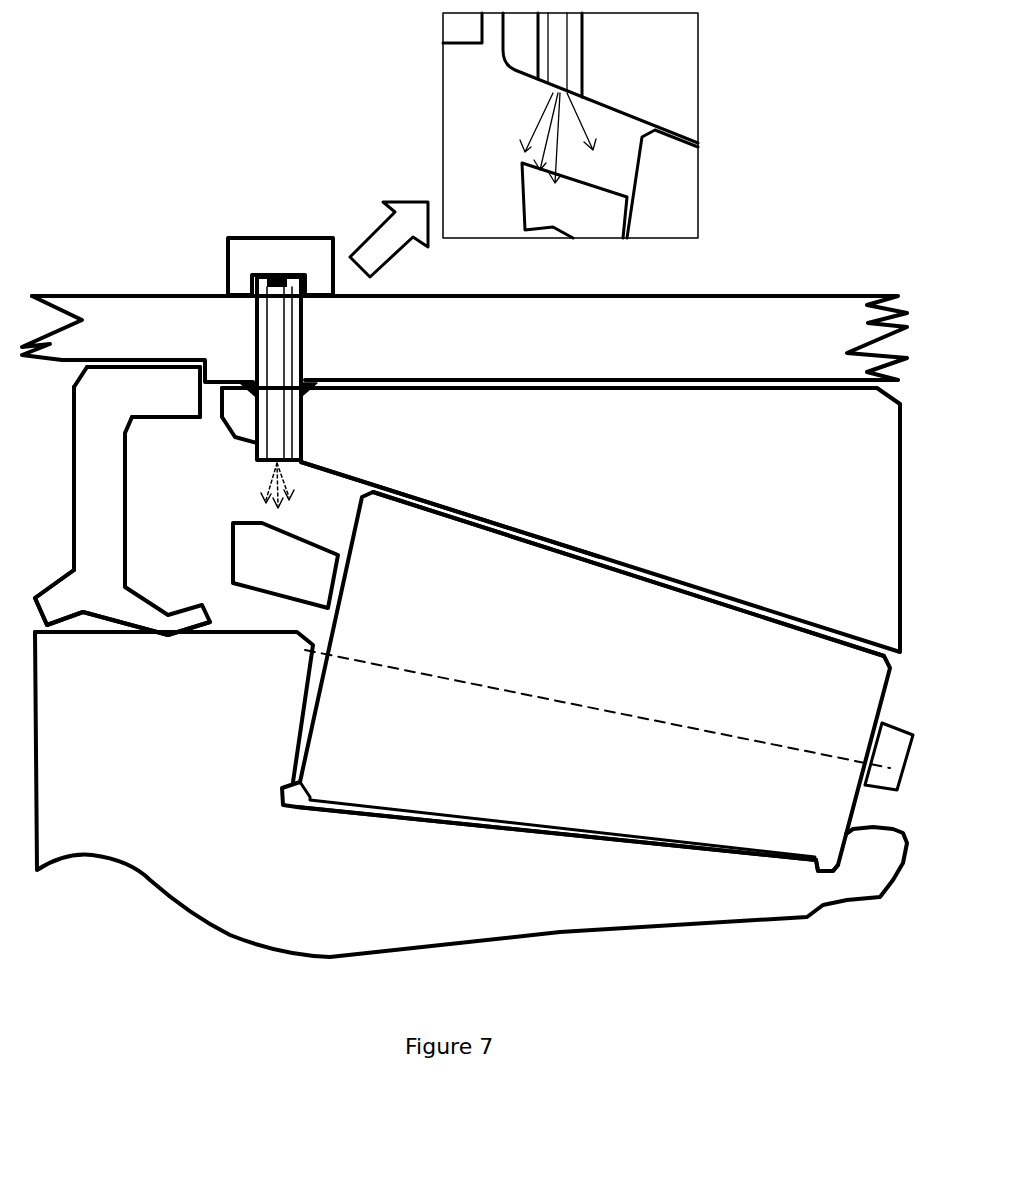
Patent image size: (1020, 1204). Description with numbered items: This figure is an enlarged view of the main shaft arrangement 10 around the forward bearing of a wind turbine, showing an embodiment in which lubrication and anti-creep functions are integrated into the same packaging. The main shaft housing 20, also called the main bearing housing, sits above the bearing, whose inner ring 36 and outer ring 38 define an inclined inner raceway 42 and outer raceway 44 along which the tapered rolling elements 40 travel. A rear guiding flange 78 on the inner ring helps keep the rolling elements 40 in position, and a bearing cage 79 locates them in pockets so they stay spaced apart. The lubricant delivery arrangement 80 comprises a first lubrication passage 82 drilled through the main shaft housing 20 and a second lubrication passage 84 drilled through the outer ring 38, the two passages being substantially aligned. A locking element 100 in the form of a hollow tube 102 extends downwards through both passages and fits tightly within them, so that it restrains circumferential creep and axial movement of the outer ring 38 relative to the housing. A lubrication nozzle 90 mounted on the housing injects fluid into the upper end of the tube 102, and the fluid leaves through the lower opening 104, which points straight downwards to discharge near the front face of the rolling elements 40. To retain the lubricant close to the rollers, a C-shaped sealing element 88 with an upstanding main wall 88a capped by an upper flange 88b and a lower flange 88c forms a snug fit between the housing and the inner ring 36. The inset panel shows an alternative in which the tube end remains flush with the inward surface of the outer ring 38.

The main shaft arrangement 10 is at (201, 124).
The main shaft housing 20 is at (696, 363).
The inner ring 36 is at (160, 758).
The outer ring 38 is at (726, 488).
The rolling elements 40 is at (701, 682).
The inner raceway 42 is at (582, 830).
The outer raceway 44 is at (640, 583).
The rear guiding flange 78 is at (840, 843).
The bearing cage 79 is at (290, 573).
The lubricant delivery arrangement 80 is at (123, 242).
The first lubrication passage 82 is at (305, 362).
The second lubrication passage 84 is at (305, 442).
The sealing element 88 is at (130, 510).
The upstanding main wall 88a is at (74, 491).
The upper flange 88b is at (130, 423).
The lower flange 88c is at (112, 603).
The lubrication nozzle 90 is at (288, 243).
The locking element 100 is at (258, 327).
The hollow tube 102 is at (283, 415).
The lower opening 104 is at (270, 455).